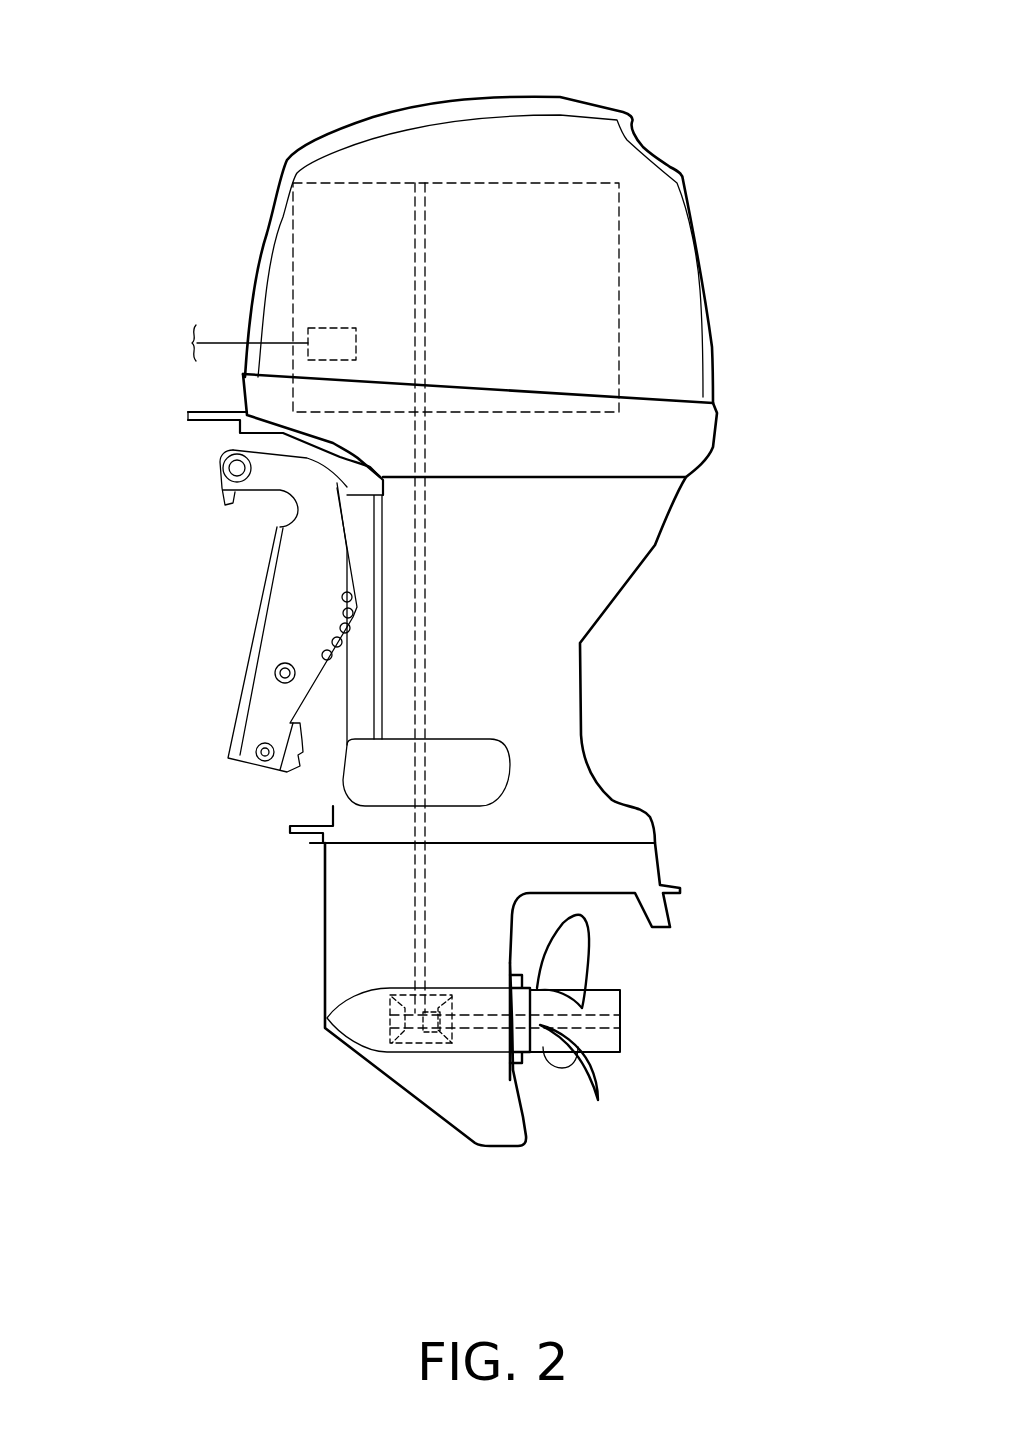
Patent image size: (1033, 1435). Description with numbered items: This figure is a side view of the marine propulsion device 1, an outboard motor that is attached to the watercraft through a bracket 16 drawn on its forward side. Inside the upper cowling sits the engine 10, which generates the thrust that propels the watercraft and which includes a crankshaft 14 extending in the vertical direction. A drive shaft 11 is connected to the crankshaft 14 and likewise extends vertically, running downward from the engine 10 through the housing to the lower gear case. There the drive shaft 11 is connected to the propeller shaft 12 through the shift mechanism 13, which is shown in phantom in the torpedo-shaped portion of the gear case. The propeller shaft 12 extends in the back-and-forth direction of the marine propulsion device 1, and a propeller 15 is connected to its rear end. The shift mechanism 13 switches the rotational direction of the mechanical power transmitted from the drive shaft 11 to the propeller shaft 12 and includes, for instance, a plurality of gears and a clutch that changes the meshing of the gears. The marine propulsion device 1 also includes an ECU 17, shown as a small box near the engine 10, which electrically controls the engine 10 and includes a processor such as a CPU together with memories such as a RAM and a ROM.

The marine propulsion device 1 is at (252, 98).
The engine 10 is at (293, 227).
The drive shaft 11 is at (426, 597).
The propeller shaft 12 is at (490, 1035).
The shift mechanism 13 is at (393, 1040).
The crankshaft 14 is at (427, 295).
The propeller 15 is at (563, 1047).
The bracket 16 is at (297, 588).
The ECU 17 is at (322, 361).